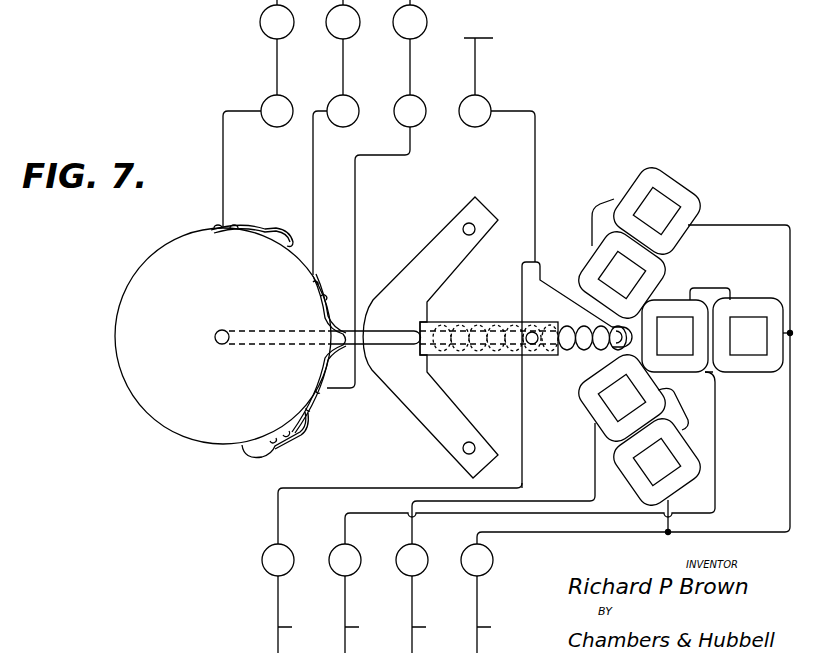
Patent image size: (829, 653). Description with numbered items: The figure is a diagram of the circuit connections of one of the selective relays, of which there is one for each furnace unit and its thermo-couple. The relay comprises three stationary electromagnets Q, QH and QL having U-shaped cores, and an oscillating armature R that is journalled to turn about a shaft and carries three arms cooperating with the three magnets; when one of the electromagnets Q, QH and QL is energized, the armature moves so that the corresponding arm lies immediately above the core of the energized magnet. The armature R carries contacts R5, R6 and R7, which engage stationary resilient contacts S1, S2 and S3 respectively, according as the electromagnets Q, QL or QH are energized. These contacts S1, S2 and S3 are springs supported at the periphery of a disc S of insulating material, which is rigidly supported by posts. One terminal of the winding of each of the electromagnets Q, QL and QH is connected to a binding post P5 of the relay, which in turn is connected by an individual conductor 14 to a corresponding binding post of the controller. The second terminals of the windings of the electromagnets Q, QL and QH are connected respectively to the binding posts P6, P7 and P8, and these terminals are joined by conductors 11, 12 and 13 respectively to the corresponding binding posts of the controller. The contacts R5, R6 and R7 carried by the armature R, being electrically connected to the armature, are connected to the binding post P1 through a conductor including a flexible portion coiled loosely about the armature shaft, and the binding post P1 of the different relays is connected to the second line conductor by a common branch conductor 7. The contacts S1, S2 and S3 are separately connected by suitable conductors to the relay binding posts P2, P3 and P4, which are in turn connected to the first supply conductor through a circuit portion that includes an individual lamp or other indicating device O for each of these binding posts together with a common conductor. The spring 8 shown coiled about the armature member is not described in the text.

The lamp or indicating device O is at (401, 36).
The common branch conductor 7 is at (490, 40).
The binding post P1 is at (480, 106).
The binding post P2 is at (422, 101).
The binding post P3 is at (355, 101).
The binding post P4 is at (289, 101).
The binding post P5 is at (484, 571).
The binding post P6 is at (418, 572).
The binding post P7 is at (351, 572).
The binding post P8 is at (284, 572).
The conductor 11 is at (433, 614).
The conductor 12 is at (366, 614).
The conductor 13 is at (299, 614).
The individual conductor 14 is at (496, 614).
The disc of insulating material S is at (223, 336).
The stationary resilient contact S1 is at (242, 444).
The stationary resilient contact S2 is at (330, 366).
The stationary resilient contact S3 is at (284, 248).
The oscillating armature R is at (425, 265).
The armature contact R5 is at (476, 448).
The armature contact R6 is at (534, 333).
The armature contact R7 is at (461, 224).
The spring 8 is at (578, 352).
The electromagnet Q is at (748, 327).
The electromagnet QH is at (668, 212).
The electromagnet QL is at (668, 462).